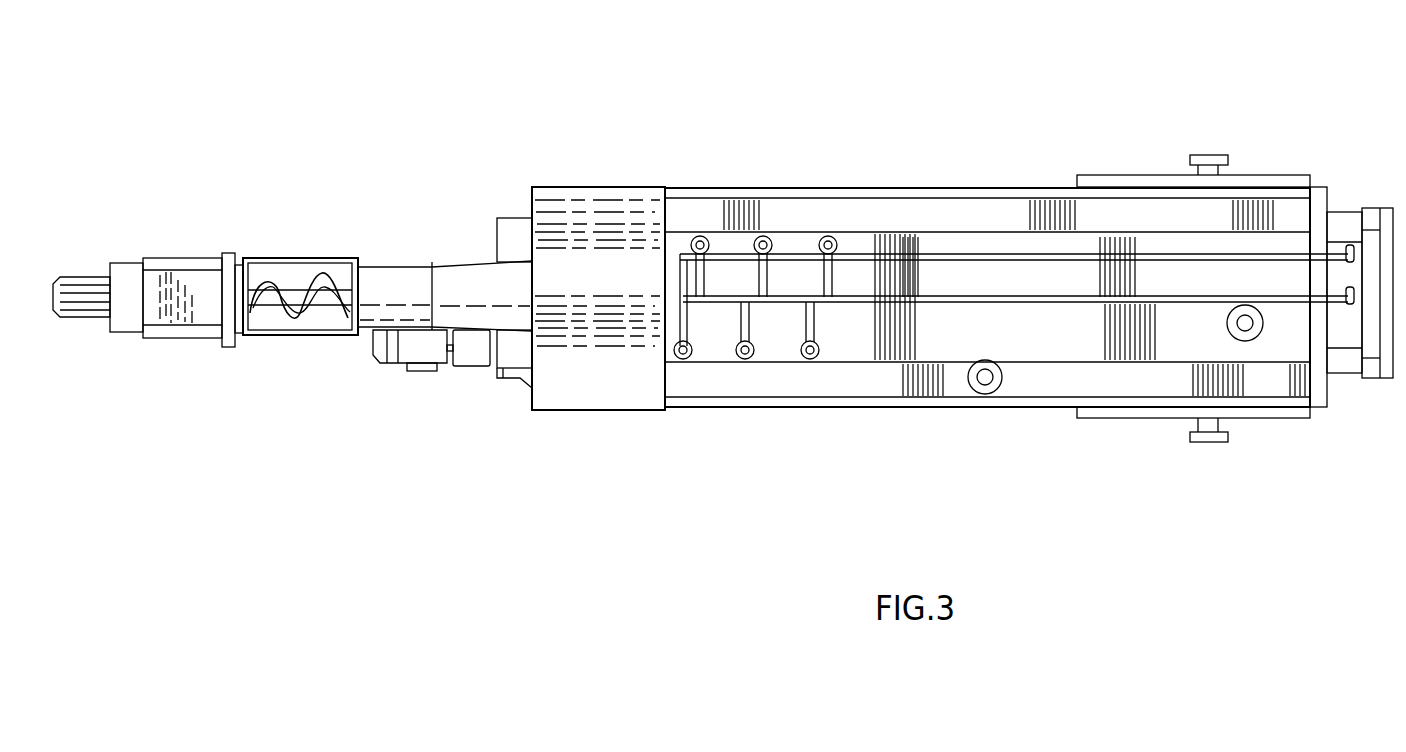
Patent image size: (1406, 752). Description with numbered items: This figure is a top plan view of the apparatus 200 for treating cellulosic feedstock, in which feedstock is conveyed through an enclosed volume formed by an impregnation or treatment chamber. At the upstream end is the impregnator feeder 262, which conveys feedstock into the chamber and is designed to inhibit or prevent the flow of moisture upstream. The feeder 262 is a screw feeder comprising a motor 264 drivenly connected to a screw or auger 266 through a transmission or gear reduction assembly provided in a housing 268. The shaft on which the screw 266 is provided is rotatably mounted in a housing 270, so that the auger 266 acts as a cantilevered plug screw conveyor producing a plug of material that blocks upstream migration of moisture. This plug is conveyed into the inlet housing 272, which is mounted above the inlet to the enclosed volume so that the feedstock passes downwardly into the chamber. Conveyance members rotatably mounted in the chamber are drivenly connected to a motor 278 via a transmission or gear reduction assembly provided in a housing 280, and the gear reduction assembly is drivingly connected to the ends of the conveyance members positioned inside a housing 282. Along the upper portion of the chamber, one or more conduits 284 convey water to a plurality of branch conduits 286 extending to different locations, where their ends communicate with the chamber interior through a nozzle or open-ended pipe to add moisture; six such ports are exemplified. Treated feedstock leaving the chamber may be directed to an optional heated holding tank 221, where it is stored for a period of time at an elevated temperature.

The apparatus 200 is at (1147, 103).
The heated holding tank 221 is at (1270, 175).
The impregnator feeder 262 is at (311, 352).
The motor 264 is at (82, 320).
The screw or auger 266 is at (320, 278).
The housing 268 is at (112, 262).
The housing 270 is at (193, 282).
The inlet housing 272 is at (587, 200).
The motor 278 is at (417, 343).
The housing 280 is at (470, 353).
The housing 282 is at (512, 358).
The conduit 284 is at (1000, 248).
The branch conduits 286 is at (812, 338).